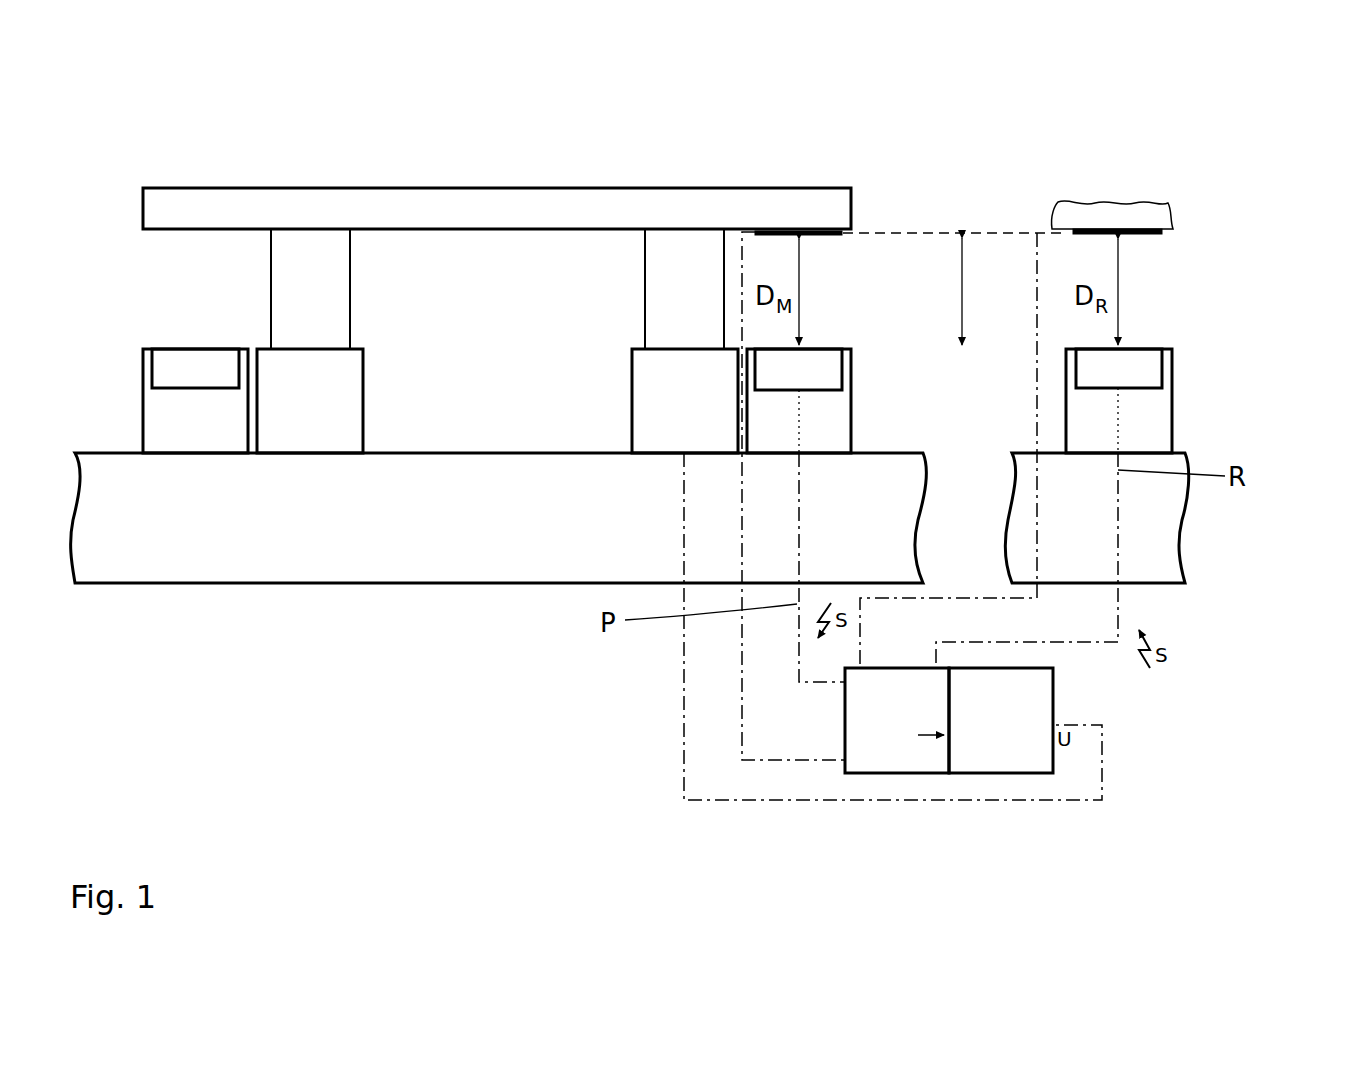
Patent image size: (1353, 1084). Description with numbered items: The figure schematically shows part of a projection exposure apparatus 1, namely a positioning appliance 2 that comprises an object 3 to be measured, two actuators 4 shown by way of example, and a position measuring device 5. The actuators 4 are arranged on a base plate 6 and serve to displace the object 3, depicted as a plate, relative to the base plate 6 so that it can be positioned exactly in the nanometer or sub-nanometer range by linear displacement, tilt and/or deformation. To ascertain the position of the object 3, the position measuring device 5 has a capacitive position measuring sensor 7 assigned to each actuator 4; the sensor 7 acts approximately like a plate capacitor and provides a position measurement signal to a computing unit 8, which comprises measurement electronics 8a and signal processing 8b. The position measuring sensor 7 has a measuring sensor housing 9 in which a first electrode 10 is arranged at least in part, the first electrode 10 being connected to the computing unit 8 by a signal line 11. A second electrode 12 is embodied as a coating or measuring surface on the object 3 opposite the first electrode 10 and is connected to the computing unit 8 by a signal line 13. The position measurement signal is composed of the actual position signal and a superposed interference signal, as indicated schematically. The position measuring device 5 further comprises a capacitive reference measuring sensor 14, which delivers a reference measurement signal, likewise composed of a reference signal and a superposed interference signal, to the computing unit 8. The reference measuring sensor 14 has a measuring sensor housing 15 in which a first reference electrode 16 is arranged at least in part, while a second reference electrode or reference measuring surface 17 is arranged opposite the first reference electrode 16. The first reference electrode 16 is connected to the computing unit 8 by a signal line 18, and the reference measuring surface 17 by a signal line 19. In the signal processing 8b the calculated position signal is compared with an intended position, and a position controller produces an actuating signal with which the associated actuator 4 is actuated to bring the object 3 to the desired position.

The projection exposure apparatus 1 is at (567, 153).
The positioning appliance 2 is at (123, 283).
The object to be measured 3 is at (803, 197).
The actuator 4 is at (678, 360).
The position measuring device 5 is at (940, 205).
The base plate 6 is at (390, 575).
The capacitive position measuring sensor 7 is at (558, 380).
The computing unit 8 is at (1059, 790).
The measurement electronics 8a is at (898, 767).
The signal processing 8b is at (1003, 767).
The measuring sensor housing 9 is at (843, 447).
The first electrode 10 is at (838, 356).
The signal line 11 is at (797, 637).
The second electrode 12 is at (842, 233).
The signal line 13 is at (742, 737).
The capacitive reference measuring sensor 14 is at (1192, 284).
The measuring sensor housing 15 is at (1165, 428).
The first reference electrode 16 is at (1150, 370).
The reference measuring surface 17 is at (1058, 205).
The signal line 18 is at (1118, 528).
The signal line 19 is at (1037, 563).